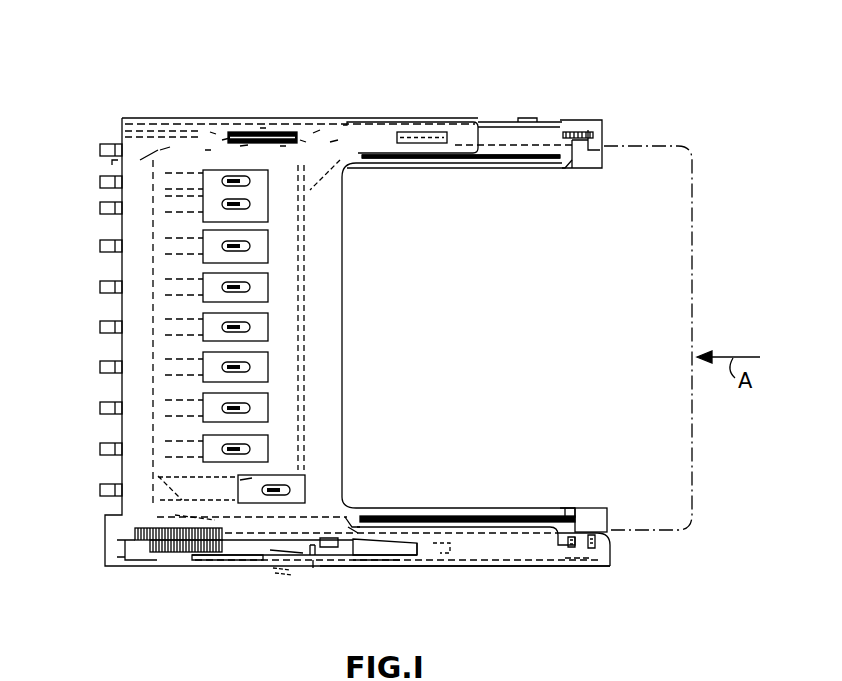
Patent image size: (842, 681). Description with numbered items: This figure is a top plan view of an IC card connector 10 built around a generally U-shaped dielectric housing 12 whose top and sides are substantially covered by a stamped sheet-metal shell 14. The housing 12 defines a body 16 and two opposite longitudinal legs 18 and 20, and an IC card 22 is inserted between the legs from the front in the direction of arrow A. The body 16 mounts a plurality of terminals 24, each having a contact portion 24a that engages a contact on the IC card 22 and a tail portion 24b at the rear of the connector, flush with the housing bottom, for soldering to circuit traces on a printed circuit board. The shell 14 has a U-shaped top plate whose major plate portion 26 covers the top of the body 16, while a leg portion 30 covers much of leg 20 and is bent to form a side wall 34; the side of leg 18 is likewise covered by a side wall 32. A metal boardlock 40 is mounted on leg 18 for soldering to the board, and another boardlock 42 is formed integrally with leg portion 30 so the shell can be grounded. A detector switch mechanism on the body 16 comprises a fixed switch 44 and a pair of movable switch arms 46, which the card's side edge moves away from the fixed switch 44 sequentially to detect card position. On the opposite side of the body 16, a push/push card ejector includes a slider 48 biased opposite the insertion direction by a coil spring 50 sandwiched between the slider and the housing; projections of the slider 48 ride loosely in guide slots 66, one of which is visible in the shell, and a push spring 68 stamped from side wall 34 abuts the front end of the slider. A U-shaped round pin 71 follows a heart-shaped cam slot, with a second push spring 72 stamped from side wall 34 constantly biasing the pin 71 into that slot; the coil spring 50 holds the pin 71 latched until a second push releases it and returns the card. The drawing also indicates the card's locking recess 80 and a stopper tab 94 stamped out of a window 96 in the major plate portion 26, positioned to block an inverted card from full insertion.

The IC card connector 10 is at (108, 97).
The dielectric housing 12 is at (268, 197).
The metal shell 14 is at (132, 305).
The body 16 is at (145, 433).
The leg 18 is at (498, 130).
The leg 20 is at (518, 508).
The IC card 22 is at (695, 208).
The terminals 24 is at (173, 168).
The contact portion 24a is at (217, 200).
The tail portion 24b is at (100, 208).
The major plate portion 26 is at (332, 300).
The leg portion 30 is at (480, 540).
The side wall 32 is at (428, 118).
The side wall 34 is at (545, 565).
The metal boardlock 40 is at (592, 156).
The boardlock 42 is at (594, 518).
The fixed switch 44 is at (280, 118).
The movable switch arms 46 is at (172, 108).
The slider 48 is at (285, 552).
The coil spring 50 is at (165, 555).
The guide slots 66 is at (415, 555).
The push spring 68 is at (356, 566).
The round pin 71 is at (313, 562).
The push spring 72 is at (300, 578).
The locking recess 80 is at (370, 505).
The stopper tab 94 is at (302, 474).
The window 96 is at (253, 478).